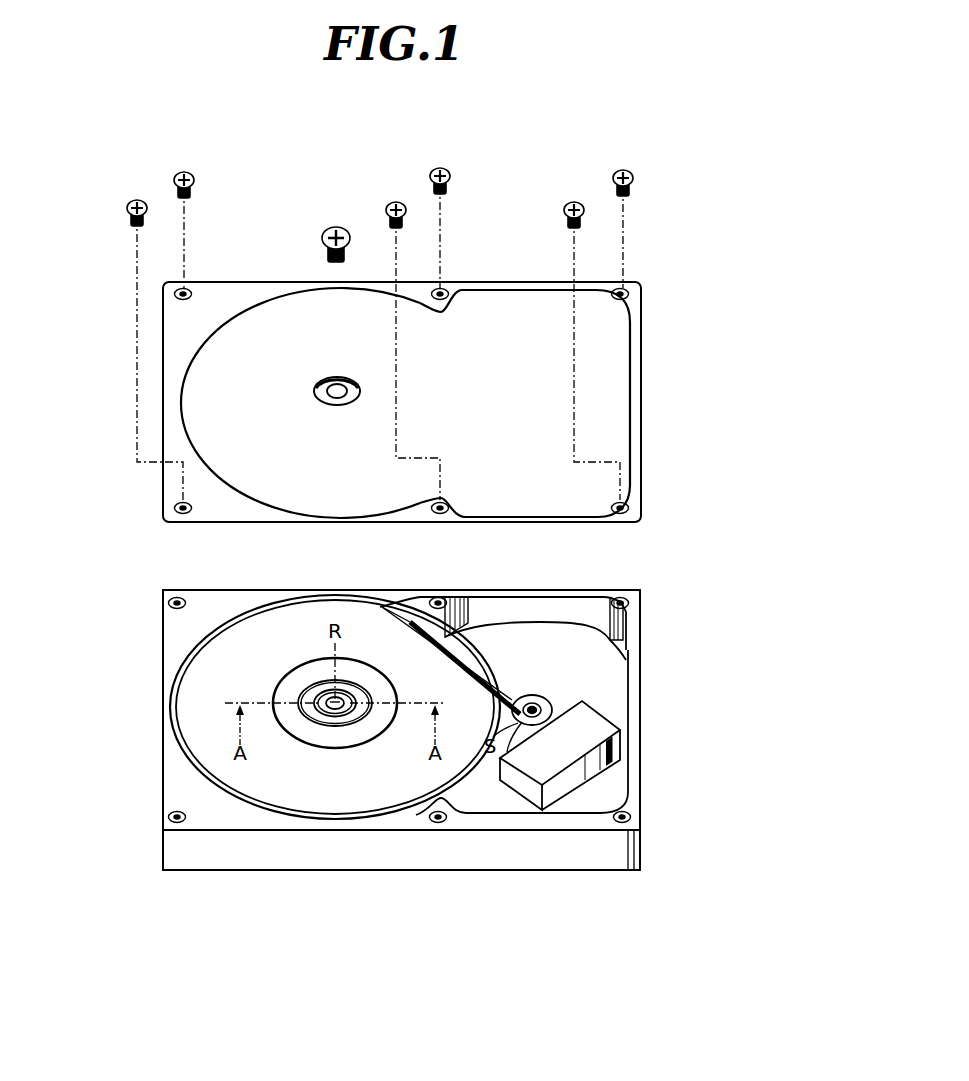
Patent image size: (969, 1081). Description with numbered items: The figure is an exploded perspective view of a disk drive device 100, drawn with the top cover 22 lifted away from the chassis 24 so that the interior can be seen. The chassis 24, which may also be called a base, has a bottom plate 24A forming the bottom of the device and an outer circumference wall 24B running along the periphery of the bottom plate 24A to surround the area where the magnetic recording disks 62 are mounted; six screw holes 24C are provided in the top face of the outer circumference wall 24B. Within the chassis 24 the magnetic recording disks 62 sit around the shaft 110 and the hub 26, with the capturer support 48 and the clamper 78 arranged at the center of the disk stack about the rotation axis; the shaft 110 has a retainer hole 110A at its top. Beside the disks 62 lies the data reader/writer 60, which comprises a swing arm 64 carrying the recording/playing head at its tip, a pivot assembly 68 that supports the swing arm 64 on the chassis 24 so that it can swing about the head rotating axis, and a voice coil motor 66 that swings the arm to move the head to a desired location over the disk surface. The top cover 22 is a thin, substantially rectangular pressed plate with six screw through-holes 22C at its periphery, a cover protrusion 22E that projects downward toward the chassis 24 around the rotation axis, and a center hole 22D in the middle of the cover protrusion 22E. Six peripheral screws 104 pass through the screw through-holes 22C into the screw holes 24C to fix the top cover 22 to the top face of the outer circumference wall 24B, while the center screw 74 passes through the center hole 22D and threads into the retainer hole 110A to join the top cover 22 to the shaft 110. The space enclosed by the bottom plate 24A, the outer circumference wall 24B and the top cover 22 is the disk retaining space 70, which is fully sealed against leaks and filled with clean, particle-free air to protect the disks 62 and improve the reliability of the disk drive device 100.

The disk drive device 100 is at (690, 905).
The top cover 22 is at (612, 355).
The screw through-holes 22C is at (187, 292).
The center hole 22D is at (343, 396).
The cover protrusion 22E is at (322, 398).
The chassis 24 is at (526, 845).
The bottom plate 24A is at (578, 680).
The outer circumference wall 24B is at (632, 667).
The screw holes 24C is at (168, 604).
The hub 26 is at (302, 690).
The capturer support 48 is at (314, 687).
The data reader/writer 60 is at (558, 708).
The magnetic recording disks 62 is at (243, 654).
The swing arm 64 is at (478, 668).
The voice coil motor 66 is at (563, 748).
The pivot assembly 68 is at (550, 712).
The disk retaining space 70 is at (515, 640).
The center screw 74 is at (323, 238).
The clamper 78 is at (282, 694).
The peripheral screws 104 is at (127, 208).
The shaft 110 is at (346, 710).
The retainer hole 110A is at (331, 713).